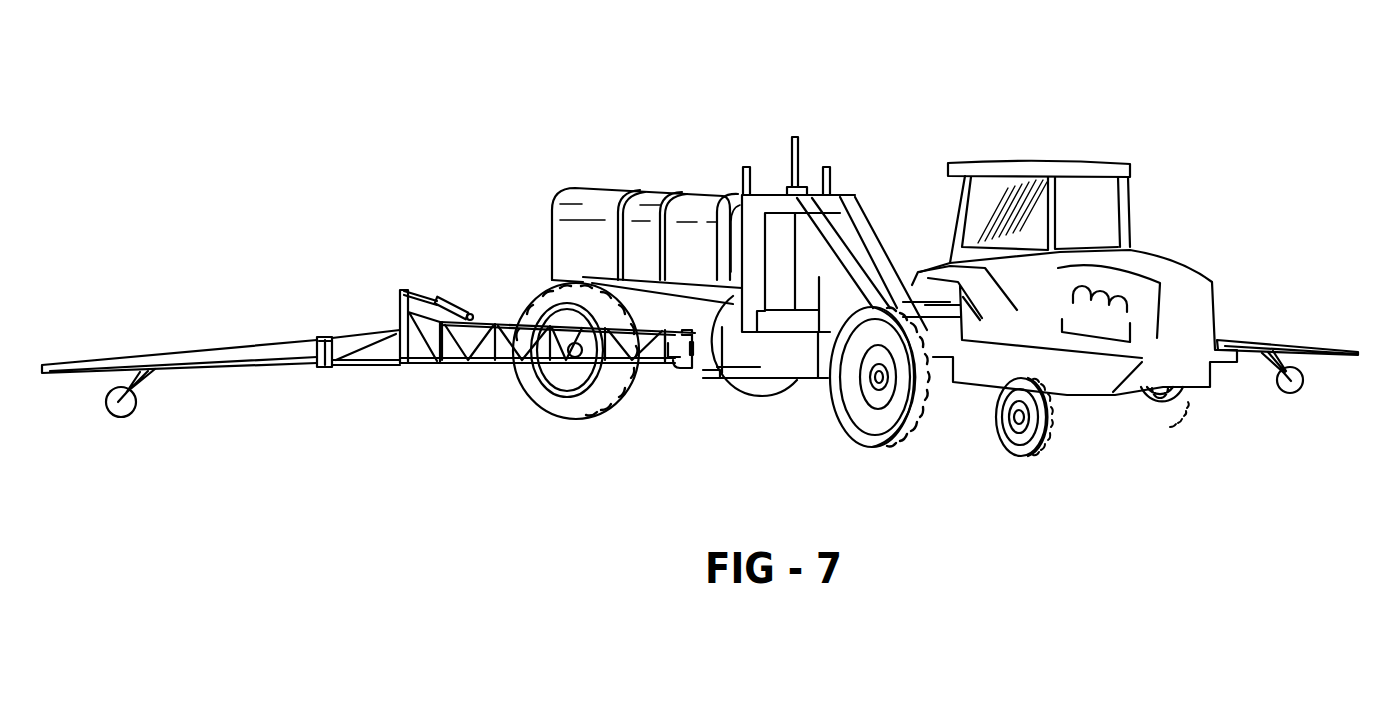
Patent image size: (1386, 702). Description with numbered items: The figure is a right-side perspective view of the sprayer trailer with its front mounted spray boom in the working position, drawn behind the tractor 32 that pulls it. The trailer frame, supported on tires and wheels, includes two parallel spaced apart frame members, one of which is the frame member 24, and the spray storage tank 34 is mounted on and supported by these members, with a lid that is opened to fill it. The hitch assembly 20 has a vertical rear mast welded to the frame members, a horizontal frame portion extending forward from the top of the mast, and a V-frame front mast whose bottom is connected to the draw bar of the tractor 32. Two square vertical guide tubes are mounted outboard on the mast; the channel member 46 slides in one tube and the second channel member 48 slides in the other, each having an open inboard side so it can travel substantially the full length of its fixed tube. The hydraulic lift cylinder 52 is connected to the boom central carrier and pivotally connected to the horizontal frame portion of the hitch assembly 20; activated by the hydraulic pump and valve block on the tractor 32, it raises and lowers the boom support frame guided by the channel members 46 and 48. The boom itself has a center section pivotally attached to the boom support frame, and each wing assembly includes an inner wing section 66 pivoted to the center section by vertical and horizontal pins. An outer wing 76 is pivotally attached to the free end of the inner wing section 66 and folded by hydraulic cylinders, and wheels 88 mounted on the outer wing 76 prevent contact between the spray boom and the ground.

The hitch assembly 20 is at (886, 189).
The frame member 24 is at (716, 370).
The tractor 32 is at (1053, 161).
The spray storage tank 34 is at (560, 246).
The channel member 46 is at (833, 168).
The second channel member 48 is at (745, 183).
The hydraulic lift cylinder 52 is at (795, 136).
The inner wing section 66 is at (477, 366).
The outer wing 76 is at (204, 350).
The wheels 88 is at (137, 406).